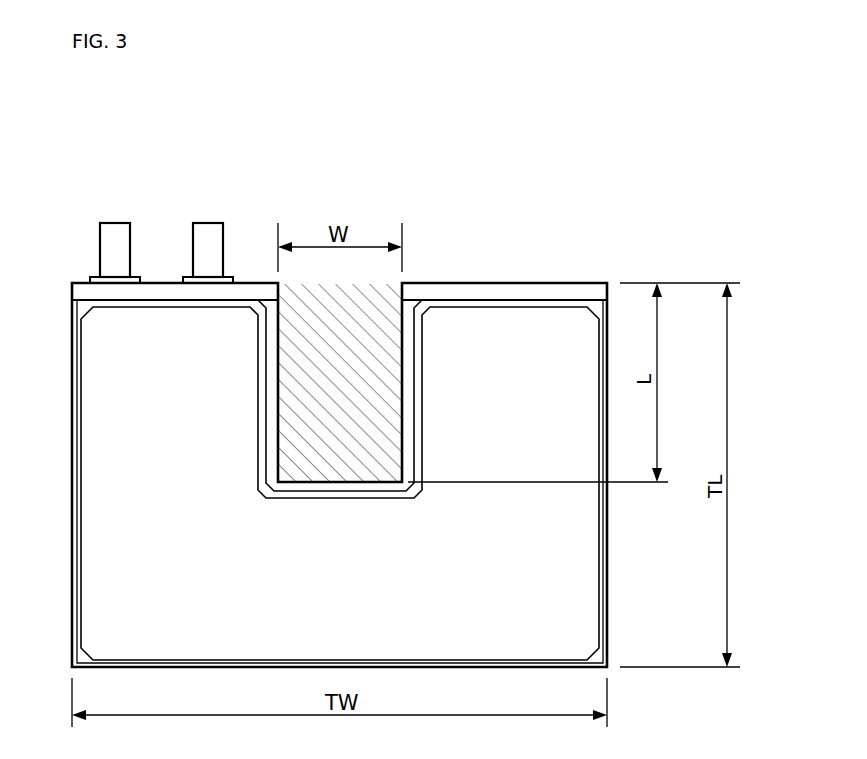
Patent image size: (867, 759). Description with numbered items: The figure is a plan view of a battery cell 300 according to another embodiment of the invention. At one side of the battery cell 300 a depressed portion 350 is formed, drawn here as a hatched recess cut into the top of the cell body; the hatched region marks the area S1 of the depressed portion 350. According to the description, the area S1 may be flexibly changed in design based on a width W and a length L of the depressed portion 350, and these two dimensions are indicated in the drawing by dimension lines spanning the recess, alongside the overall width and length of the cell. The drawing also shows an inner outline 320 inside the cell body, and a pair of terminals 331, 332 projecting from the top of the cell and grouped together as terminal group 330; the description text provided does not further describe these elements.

The battery cell 300 is at (126, 155).
The electrode assembly 320 is at (607, 542).
The electrode terminals 330 is at (293, 166).
The first electrode terminal 331 is at (113, 236).
The second electrode terminal 332 is at (208, 236).
The depressed portion 350 is at (332, 474).
The area of the depressed portion S1 is at (362, 330).